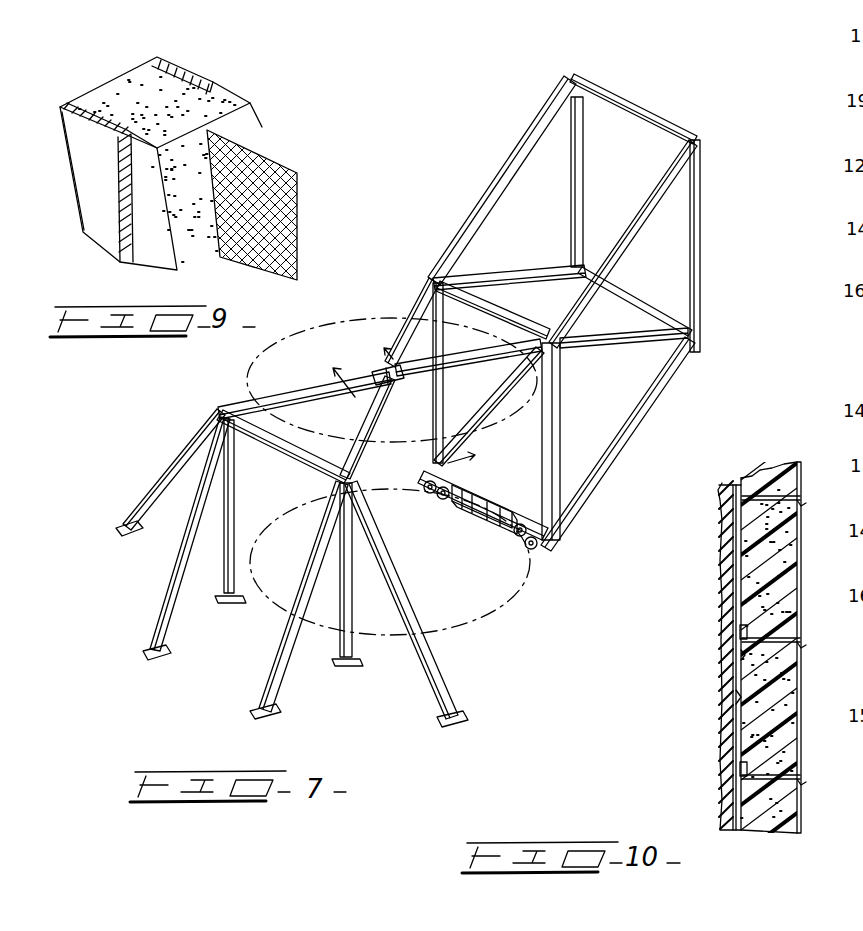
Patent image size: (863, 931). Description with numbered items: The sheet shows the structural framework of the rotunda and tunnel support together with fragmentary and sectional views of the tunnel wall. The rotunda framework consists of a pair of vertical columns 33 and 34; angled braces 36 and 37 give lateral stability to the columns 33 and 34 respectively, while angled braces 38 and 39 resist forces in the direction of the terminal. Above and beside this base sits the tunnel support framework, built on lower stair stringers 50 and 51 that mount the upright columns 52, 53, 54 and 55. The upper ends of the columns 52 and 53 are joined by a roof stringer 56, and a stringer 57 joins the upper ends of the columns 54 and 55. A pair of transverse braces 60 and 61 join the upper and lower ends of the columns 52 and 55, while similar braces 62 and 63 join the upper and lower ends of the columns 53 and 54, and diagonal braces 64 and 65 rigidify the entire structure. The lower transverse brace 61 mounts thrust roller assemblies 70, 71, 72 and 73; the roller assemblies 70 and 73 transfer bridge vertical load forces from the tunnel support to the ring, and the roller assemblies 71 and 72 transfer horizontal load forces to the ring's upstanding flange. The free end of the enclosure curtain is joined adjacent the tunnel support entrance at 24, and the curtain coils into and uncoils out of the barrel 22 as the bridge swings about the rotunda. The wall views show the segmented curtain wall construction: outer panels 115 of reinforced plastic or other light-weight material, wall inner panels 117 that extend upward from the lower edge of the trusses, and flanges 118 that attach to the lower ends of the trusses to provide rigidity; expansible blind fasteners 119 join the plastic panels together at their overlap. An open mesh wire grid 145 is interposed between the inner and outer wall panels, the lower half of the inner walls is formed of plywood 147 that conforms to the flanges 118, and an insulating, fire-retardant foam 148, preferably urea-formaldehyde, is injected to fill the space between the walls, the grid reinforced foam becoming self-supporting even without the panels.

In FIG. 7, the barrel 22 is at (488, 391).
In FIG. 7, the tunnel support entrance 24 is at (430, 467).
In FIG. 7, the vertical column 33 is at (222, 600).
In FIG. 7, the vertical column 34 is at (338, 650).
In FIG. 7, the angled brace 36 is at (181, 449).
In FIG. 7, the angled brace 37 is at (433, 692).
In FIG. 7, the angled brace 38 is at (168, 591).
In FIG. 7, the angled brace 39 is at (281, 648).
In FIG. 7, the lower stair stringer 50 is at (484, 405).
In FIG. 7, the lower stair stringer 51 is at (618, 457).
In FIG. 7, the upright column 52 is at (432, 420).
In FIG. 7, the upright column 53 is at (571, 182).
In FIG. 7, the upright column 54 is at (702, 289).
In FIG. 7, the upright column 55 is at (561, 446).
In FIG. 7, the roof stringer 56 is at (504, 176).
In FIG. 7, the stringer 57 is at (636, 196).
In FIG. 7, the transverse brace 60 is at (490, 311).
In FIG. 7, the lower transverse brace 61 is at (480, 486).
In FIG. 7, the transverse brace 62 is at (620, 102).
In FIG. 7, the transverse brace 63 is at (641, 301).
In FIG. 7, the diagonal brace 64 is at (490, 279).
In FIG. 7, the diagonal brace 65 is at (633, 341).
In FIG. 7, the thrust roller assembly 70 is at (430, 494).
In FIG. 7, the thrust roller assembly 71 is at (466, 506).
In FIG. 7, the thrust roller assembly 72 is at (508, 531).
In FIG. 7, the thrust roller assembly 73 is at (526, 551).
In FIG. 9, the outer panel 115 is at (108, 233).
In FIG. 10, the outer panel 115 is at (804, 824).
In FIG. 9, the wall inner panel 117 is at (205, 76).
In FIG. 10, the wall inner panel 117 is at (736, 604).
In FIG. 10, the flange 118 is at (736, 649).
In FIG. 10, the expansible blind fastener 119 is at (803, 499).
In FIG. 9, the wire grid 145 is at (298, 208).
In FIG. 10, the wire grid 145 is at (800, 628).
In FIG. 10, the plywood 147 is at (735, 688).
In FIG. 9, the foam 148 is at (222, 92).
In FIG. 10, the foam 148 is at (803, 692).